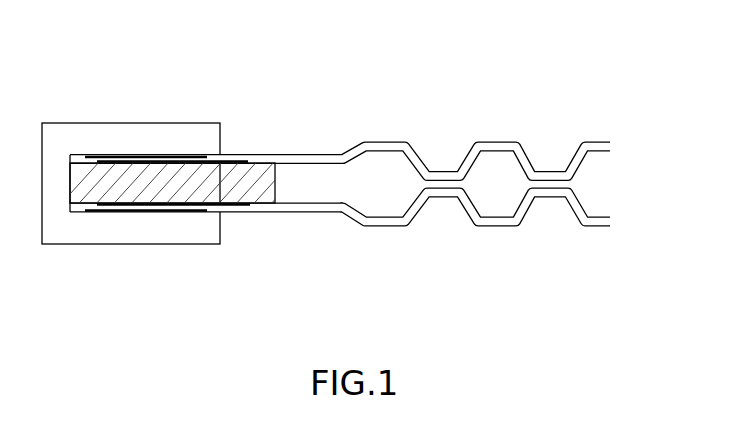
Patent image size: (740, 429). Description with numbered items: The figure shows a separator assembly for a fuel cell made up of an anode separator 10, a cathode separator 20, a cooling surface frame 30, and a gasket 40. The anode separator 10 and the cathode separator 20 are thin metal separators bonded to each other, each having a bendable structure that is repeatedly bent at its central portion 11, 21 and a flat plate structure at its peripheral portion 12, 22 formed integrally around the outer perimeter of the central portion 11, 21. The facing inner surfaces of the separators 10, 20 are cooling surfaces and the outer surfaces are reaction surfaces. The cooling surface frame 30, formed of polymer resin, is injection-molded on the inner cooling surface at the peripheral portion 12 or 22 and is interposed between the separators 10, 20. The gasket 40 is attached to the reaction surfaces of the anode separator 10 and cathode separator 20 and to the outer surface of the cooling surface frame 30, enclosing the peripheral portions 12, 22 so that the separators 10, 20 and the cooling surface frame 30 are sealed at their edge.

The anode separator 10 is at (367, 91).
The central portion 11 is at (493, 140).
The peripheral portion 12 is at (262, 128).
The cathode separator 20 is at (374, 266).
The central portion 21 is at (496, 227).
The peripheral portion 22 is at (273, 212).
The cooling surface frame 30 is at (140, 193).
The gasket 40 is at (110, 130).